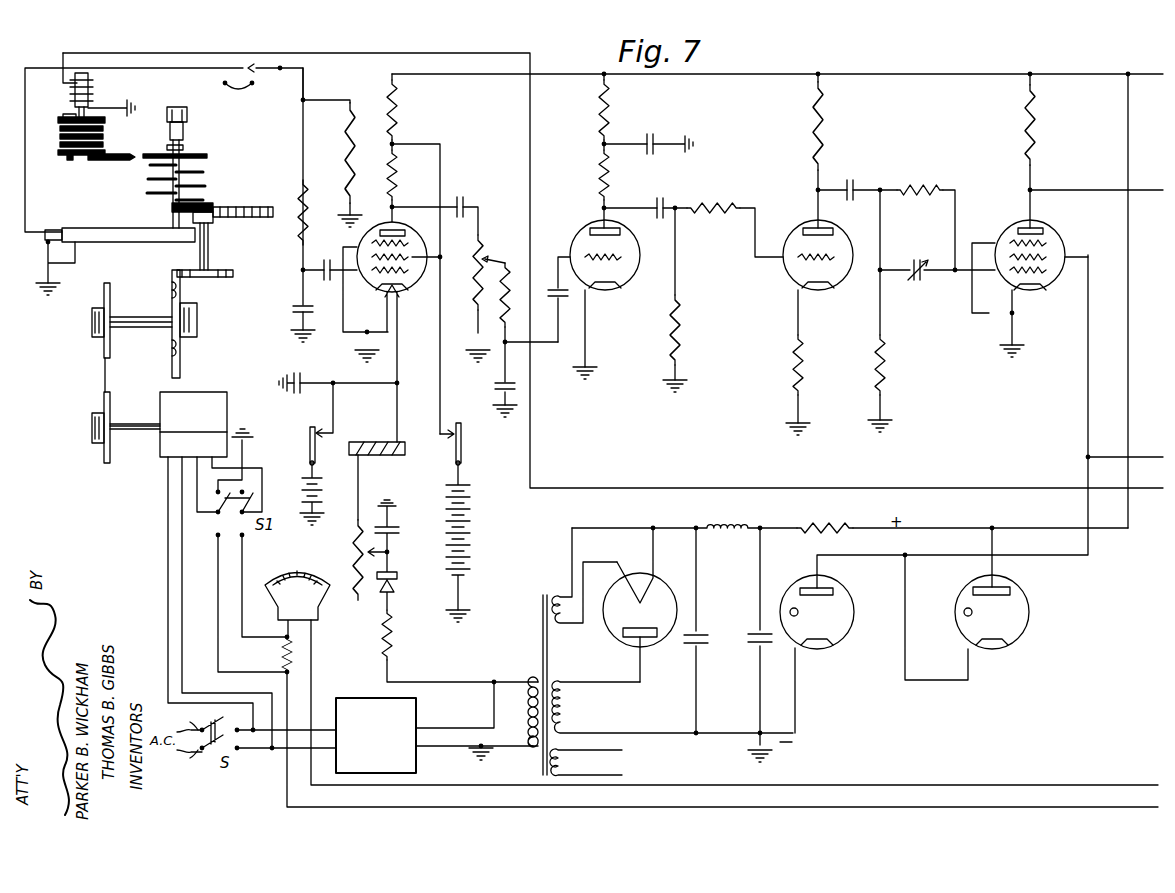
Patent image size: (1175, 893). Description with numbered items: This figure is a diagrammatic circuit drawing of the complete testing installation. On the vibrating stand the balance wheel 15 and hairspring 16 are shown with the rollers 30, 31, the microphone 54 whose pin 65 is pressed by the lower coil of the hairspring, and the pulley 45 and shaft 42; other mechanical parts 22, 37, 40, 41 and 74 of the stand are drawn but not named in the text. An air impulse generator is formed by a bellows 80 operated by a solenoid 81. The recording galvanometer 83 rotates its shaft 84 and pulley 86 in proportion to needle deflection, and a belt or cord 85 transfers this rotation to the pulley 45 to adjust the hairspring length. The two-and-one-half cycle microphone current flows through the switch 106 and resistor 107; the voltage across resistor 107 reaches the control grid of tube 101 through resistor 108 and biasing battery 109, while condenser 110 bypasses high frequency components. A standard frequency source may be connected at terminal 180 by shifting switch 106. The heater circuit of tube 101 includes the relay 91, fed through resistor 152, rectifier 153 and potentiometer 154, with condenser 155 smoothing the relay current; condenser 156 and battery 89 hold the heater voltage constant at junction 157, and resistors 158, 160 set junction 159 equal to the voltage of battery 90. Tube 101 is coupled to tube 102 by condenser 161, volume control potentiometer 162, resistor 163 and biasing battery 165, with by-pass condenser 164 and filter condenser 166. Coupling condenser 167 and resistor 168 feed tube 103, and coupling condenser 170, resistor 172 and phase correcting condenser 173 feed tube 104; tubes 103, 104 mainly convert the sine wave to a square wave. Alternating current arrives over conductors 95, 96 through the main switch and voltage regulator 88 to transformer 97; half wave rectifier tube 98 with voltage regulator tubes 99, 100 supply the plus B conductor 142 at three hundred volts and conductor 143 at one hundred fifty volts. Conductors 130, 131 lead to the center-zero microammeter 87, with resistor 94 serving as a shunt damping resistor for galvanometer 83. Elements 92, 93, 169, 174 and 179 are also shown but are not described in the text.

The balance wheel 15 is at (207, 153).
The hairspring 16 is at (205, 190).
The knob 22 is at (190, 120).
The roller 30 is at (213, 205).
The roller 31 is at (258, 206).
The shaft 37 is at (210, 258).
The bar 40 is at (228, 278).
The gear disc 41 is at (180, 372).
The shaft 42 is at (130, 312).
The pulley 45 is at (104, 348).
The microphone 54 is at (118, 242).
The pin 65 is at (172, 226).
The arm 74 is at (122, 161).
The bellows 80 is at (62, 120).
The solenoid 81 is at (92, 90).
The recording galvanometer 83 is at (212, 410).
The shaft 84 is at (140, 432).
The belt or cord 85 is at (104, 374).
The pulley 86 is at (104, 454).
The microammeter 87 is at (314, 600).
The voltage regulator 88 is at (370, 700).
The battery 89 is at (305, 490).
The battery 90 is at (470, 535).
The relay 91 is at (395, 457).
The contact 92 is at (310, 436).
The contact 93 is at (463, 438).
The resistor 94 is at (284, 654).
The conductor 95 is at (185, 718).
The conductor 96 is at (189, 762).
The transformer 97 is at (560, 583).
The half wave rectifier tube 98 is at (614, 634).
The voltage regulator tube 99 is at (828, 646).
The voltage regulator tube 100 is at (1012, 644).
The tube 101 is at (360, 227).
The tube 102 is at (570, 236).
The tube 103 is at (790, 220).
The tube 104 is at (1004, 230).
The switch 106 is at (262, 72).
The resistor 107 is at (352, 115).
The resistor 108 is at (307, 200).
The biasing battery 109 is at (326, 260).
The condenser 110 is at (310, 308).
The conductor 130 is at (916, 806).
The conductor 131 is at (806, 785).
The plus B conductor 142 is at (858, 80).
The conductor 143 is at (1100, 456).
The resistor 152 is at (392, 648).
The rectifier 153 is at (398, 586).
The potentiometer 154 is at (354, 541).
The condenser 155 is at (398, 535).
The condenser 156 is at (300, 372).
The junction 157 is at (400, 380).
The resistor 158 is at (400, 110).
The junction 159 is at (396, 140).
The resistor 160 is at (396, 190).
The condenser 161 is at (462, 195).
The potentiometer 162 is at (470, 304).
The resistor 163 is at (520, 270).
The condenser 164 is at (502, 386).
The biasing battery 165 is at (546, 300).
The filter condenser 166 is at (654, 136).
The coupling condenser 167 is at (662, 196).
The resistor 168 is at (705, 218).
The resistor 169 is at (680, 320).
The coupling condenser 170 is at (852, 186).
The resistor 172 is at (918, 184).
The condenser 173 is at (916, 284).
The lead 174 is at (1064, 192).
The lead 179 is at (843, 478).
The terminal 180 is at (218, 83).